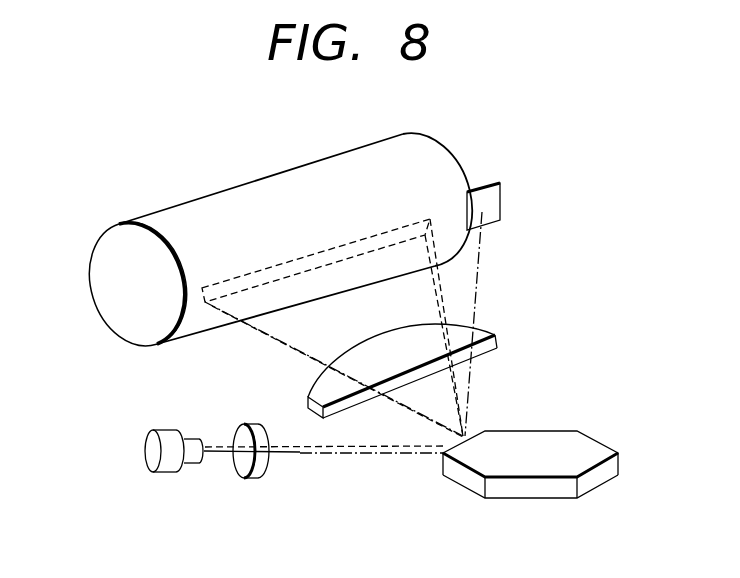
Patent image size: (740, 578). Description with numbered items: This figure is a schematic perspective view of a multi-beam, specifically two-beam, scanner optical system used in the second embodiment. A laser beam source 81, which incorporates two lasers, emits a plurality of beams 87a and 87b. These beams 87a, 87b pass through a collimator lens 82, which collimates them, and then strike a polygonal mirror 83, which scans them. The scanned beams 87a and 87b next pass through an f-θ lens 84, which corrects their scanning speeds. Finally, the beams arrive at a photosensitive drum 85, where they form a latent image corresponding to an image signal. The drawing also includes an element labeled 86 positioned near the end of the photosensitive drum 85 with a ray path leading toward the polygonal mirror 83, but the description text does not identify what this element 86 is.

The laser beam source 81 is at (150, 458).
The collimator lens 82 is at (238, 468).
The polygonal mirror 83 is at (455, 475).
The f-θ lens 84 is at (487, 332).
The photosensitive drum 85 is at (105, 308).
The light receiving element (beam detector) 86 is at (495, 203).
The beam 87a is at (290, 455).
The beam 87b is at (290, 427).